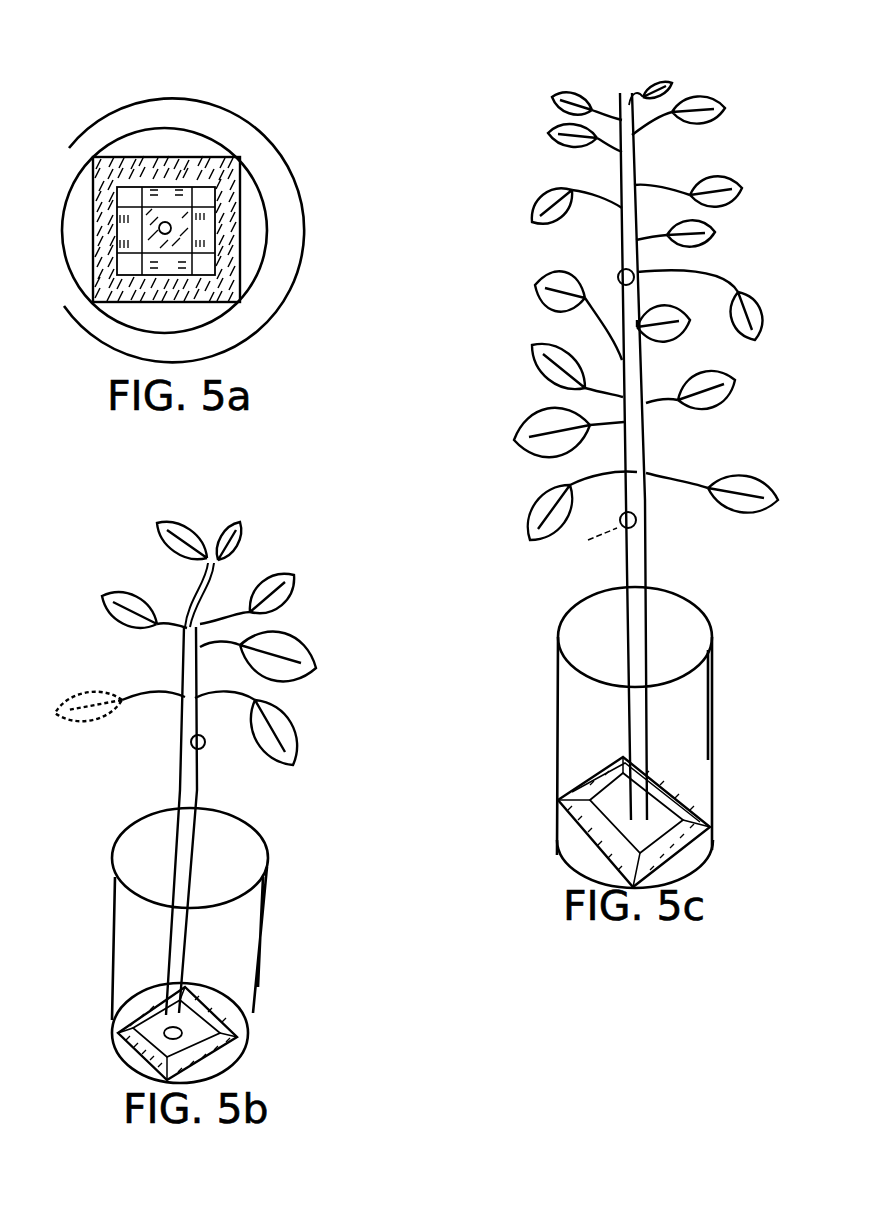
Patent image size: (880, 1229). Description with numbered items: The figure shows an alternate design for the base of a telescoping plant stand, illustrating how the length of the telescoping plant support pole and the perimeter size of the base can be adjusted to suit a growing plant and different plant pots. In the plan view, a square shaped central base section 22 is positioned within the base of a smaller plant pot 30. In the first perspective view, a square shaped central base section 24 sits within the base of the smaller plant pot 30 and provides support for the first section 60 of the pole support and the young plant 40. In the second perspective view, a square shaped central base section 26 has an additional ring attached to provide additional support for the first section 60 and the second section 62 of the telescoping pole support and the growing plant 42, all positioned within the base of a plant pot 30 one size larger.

In FIG. 5A, the square shaped central base section 22 is at (230, 182).
In FIG. 5B, the square shaped central base section 24 is at (213, 1047).
In FIG. 5C, the square shaped central base section 26 is at (557, 800).
In FIG. 5A, the plant pot 30 is at (182, 97).
In FIG. 5B, the plant pot 30 is at (268, 893).
In FIG. 5C, the plant pot 30 is at (558, 682).
In FIG. 5B, the young plant 40 is at (203, 577).
In FIG. 5C, the growing plant 42 is at (615, 168).
In FIG. 5B, the first section 60 is at (192, 750).
In FIG. 5C, the first section 60 is at (632, 538).
In FIG. 5C, the second section 62 is at (620, 297).